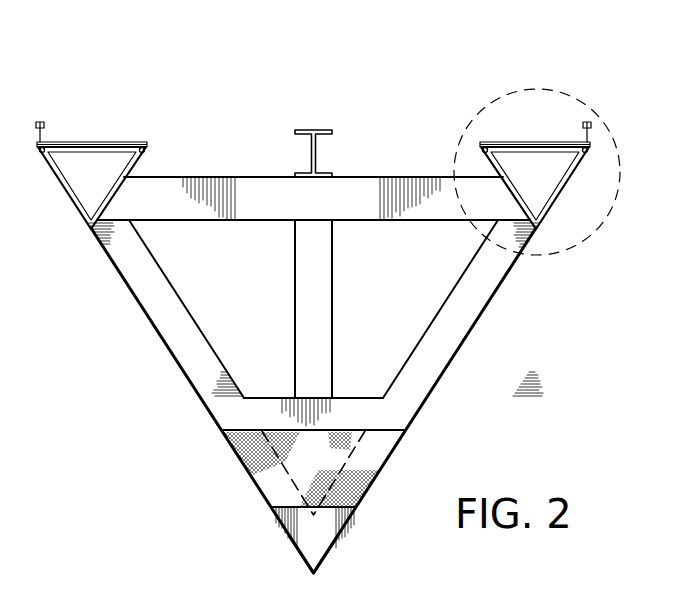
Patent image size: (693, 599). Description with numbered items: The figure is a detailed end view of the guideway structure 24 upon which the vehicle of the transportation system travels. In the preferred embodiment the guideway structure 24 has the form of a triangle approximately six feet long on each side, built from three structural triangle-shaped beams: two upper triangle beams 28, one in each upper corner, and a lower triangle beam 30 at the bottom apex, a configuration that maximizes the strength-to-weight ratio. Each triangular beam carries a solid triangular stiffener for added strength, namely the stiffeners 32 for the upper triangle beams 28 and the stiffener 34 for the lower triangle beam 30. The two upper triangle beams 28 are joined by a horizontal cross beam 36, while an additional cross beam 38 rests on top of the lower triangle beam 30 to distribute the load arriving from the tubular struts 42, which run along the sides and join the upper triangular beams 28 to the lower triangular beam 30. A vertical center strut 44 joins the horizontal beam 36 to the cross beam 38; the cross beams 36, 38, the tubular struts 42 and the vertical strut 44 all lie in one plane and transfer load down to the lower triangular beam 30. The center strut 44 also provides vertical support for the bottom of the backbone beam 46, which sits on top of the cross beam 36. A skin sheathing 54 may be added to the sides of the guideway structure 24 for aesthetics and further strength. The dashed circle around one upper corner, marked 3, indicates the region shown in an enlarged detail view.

The guideway structure 24 is at (378, 140).
The upper triangle beam 28 is at (73, 204).
The lower triangle beam 30 is at (290, 537).
The stiffener 32 is at (92, 224).
The stiffener 34 is at (328, 525).
The cross beam 36 is at (182, 177).
The cross beam 38 is at (400, 412).
The tubular strut 42 is at (172, 333).
The vertical strut 44 is at (313, 264).
The backbone beam 46 is at (313, 128).
The skin sheathing 54 is at (287, 496).
The detail view circle for FIG. 3 is at (583, 102).